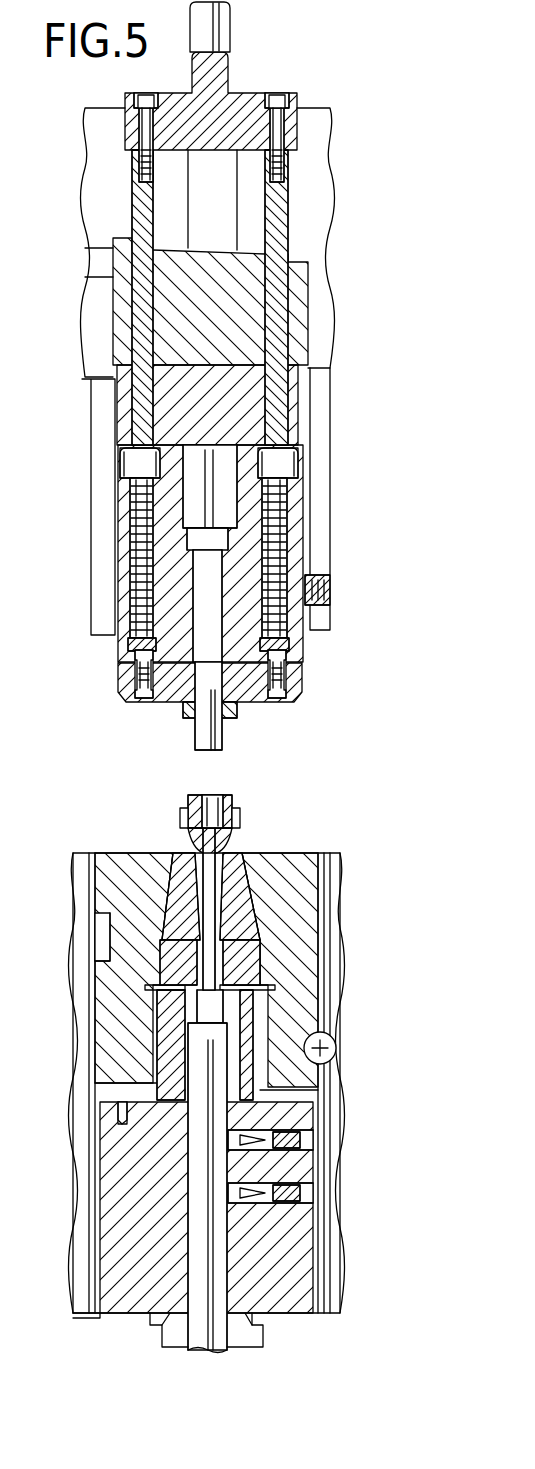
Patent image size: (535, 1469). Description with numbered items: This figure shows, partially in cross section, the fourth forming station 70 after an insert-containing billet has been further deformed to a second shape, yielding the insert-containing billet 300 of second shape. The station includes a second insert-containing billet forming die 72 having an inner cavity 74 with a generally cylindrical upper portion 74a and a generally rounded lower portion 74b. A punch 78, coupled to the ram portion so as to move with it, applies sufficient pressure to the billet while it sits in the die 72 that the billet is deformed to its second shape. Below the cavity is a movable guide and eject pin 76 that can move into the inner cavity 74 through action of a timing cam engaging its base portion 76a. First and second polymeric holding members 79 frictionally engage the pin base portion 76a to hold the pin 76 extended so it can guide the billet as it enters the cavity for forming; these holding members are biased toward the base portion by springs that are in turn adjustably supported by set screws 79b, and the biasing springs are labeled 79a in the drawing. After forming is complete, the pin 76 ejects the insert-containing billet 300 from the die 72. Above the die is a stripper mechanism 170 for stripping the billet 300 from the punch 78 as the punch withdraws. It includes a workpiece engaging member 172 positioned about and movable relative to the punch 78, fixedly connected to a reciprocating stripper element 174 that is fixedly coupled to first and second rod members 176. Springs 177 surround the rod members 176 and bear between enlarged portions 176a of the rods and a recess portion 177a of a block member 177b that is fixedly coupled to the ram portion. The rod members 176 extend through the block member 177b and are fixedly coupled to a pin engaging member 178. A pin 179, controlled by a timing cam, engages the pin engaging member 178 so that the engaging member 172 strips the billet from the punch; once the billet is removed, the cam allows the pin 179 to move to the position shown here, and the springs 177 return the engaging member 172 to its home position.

The stripper mechanism 170 is at (302, 94).
The pin 179 is at (231, 25).
The pin engaging member 178 is at (226, 108).
The rod members 176 is at (275, 593).
The enlarged portions of the rod members 176a is at (292, 447).
The springs 177 is at (276, 515).
The recess portion of the block member 177a is at (128, 632).
The block member 177b is at (246, 627).
The reciprocating stripper element 174 is at (303, 680).
The workpiece engaging member 172 is at (186, 708).
The punch 78 is at (216, 740).
The fourth forming station 70 is at (346, 778).
The insert-containing billet having a second shape 300 is at (234, 810).
The inner cavity 74 is at (194, 852).
The generally cylindrical upper portion 74a is at (226, 866).
The generally rounded lower portion 74b is at (198, 903).
The second insert-containing billet forming die 72 is at (246, 912).
The movable guide and eject pin 76 is at (222, 962).
The base portion of the pin 76a is at (242, 1334).
The polymeric holding members 79 is at (236, 1192).
The port inserts 79a is at (286, 1186).
The set screws 79b is at (292, 1136).